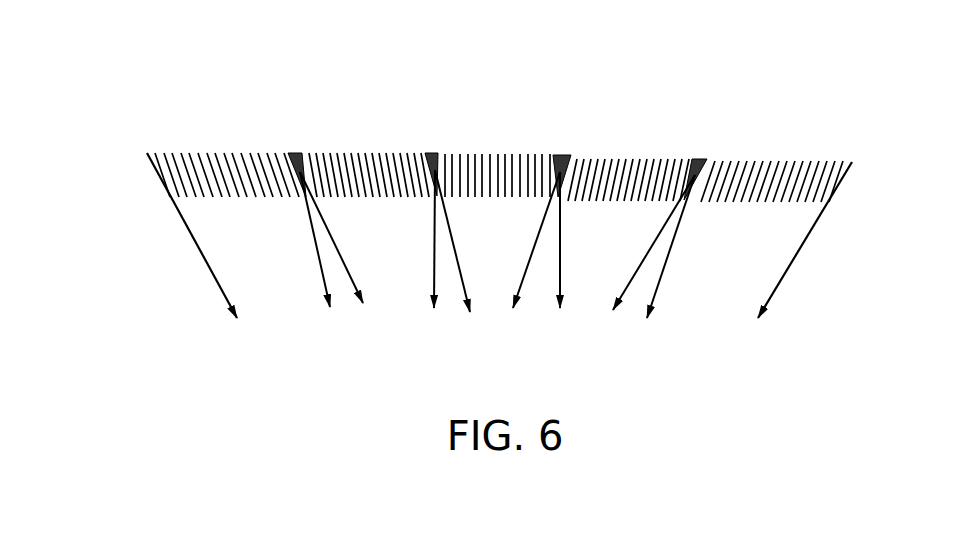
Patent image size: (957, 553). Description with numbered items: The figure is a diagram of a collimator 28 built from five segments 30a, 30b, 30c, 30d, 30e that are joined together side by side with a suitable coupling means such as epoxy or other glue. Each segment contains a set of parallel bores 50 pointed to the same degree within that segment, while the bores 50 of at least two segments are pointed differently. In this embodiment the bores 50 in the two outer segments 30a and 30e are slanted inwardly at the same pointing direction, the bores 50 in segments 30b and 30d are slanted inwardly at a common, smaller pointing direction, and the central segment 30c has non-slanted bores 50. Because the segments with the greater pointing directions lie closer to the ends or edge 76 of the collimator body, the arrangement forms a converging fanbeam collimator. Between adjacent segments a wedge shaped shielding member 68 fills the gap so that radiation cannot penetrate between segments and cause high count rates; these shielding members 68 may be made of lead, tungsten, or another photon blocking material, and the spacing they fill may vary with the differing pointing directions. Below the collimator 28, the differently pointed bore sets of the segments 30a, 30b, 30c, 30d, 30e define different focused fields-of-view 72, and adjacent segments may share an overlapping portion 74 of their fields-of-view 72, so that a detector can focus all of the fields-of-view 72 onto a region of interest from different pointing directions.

The collimator 28 is at (145, 88).
The segment 30a is at (184, 108).
The segment 30b is at (355, 118).
The segment 30c is at (500, 118).
The segment 30d is at (622, 115).
The segment 30e is at (758, 120).
The bores 50 is at (229, 153).
The wedge shaped shielding member 68 is at (291, 153).
The focused fields-of-view 72 is at (254, 266).
The overlapping portion 74 is at (343, 283).
The edge 76 is at (148, 210).